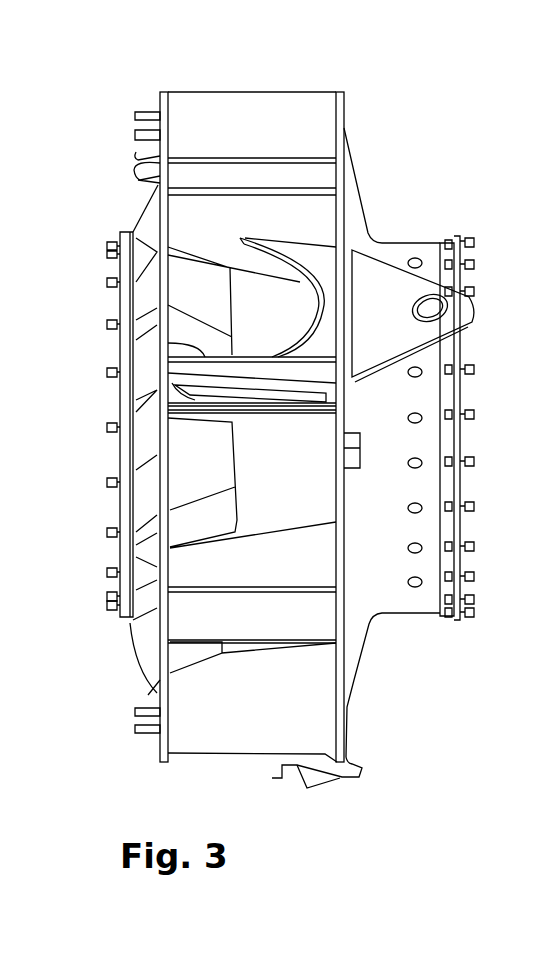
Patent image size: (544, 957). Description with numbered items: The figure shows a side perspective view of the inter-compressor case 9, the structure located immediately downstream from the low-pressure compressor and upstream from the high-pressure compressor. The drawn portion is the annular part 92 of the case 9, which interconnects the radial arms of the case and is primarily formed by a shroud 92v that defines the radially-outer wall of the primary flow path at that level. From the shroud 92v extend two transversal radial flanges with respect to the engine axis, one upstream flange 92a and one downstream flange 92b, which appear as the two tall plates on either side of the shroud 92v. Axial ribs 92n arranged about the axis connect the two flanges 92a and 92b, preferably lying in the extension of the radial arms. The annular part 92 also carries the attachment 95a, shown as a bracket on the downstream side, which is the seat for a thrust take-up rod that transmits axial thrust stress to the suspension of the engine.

The inter-compressor case 9 is at (88, 722).
The annular part 92 is at (346, 218).
The upstream radial flange 92a is at (158, 103).
The downstream radial flange 92b is at (344, 108).
The axial ribs 92n is at (197, 397).
The shroud 92v is at (260, 452).
The attachment 95a is at (369, 343).